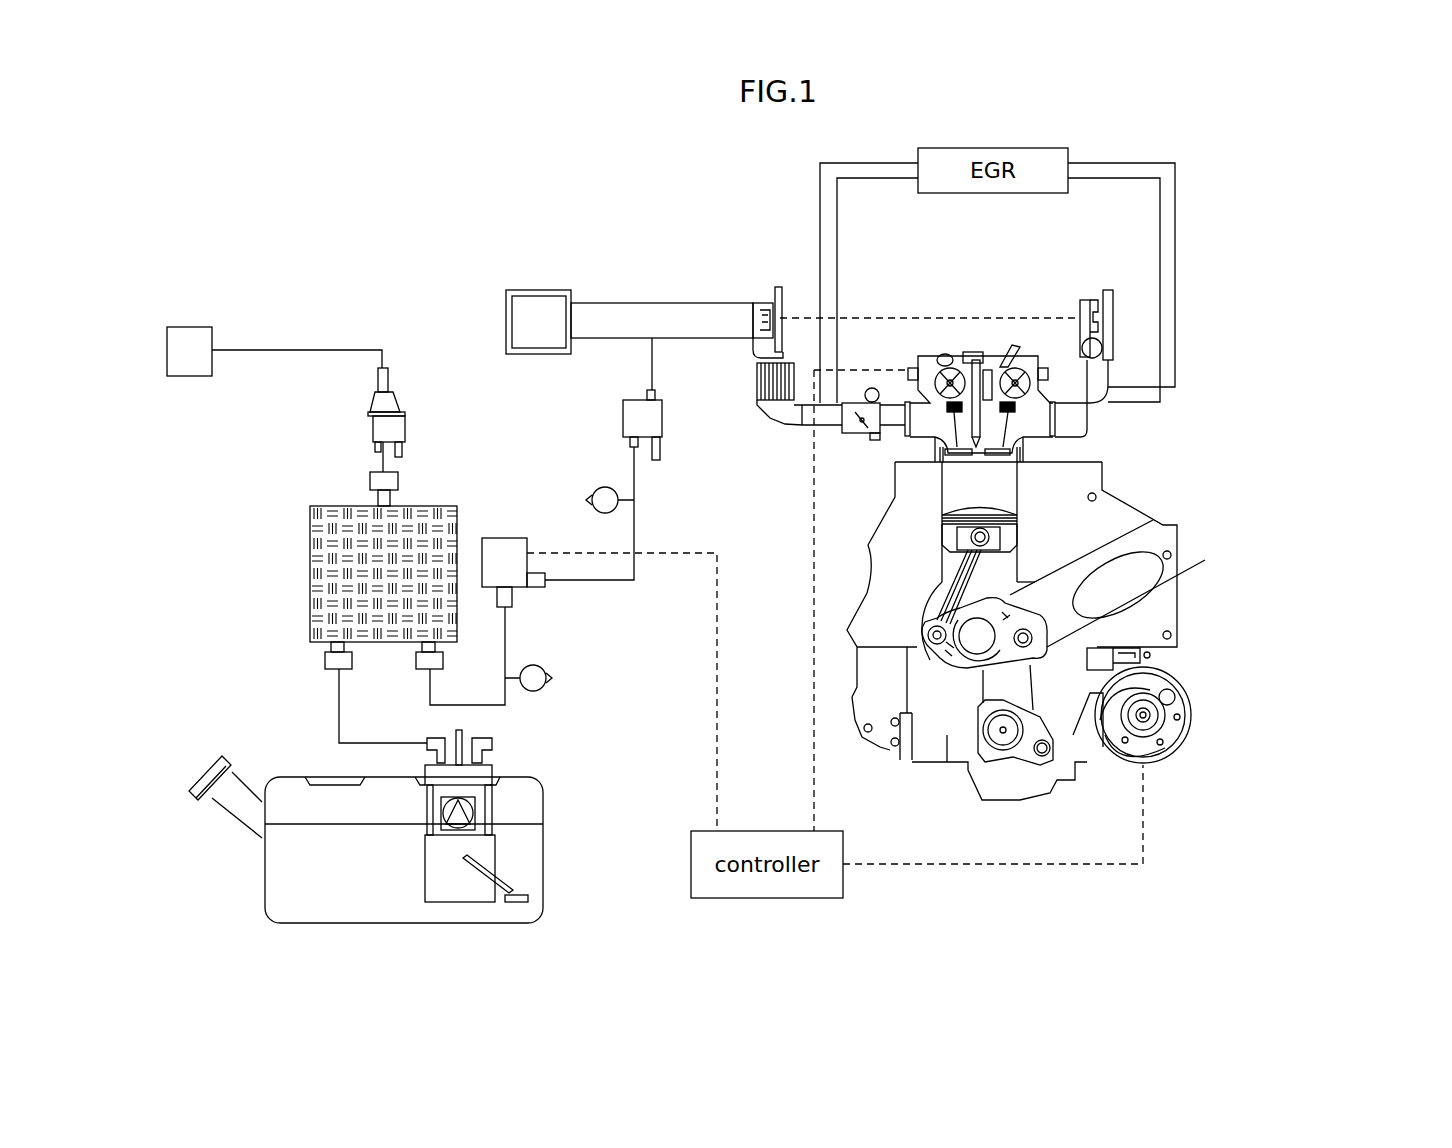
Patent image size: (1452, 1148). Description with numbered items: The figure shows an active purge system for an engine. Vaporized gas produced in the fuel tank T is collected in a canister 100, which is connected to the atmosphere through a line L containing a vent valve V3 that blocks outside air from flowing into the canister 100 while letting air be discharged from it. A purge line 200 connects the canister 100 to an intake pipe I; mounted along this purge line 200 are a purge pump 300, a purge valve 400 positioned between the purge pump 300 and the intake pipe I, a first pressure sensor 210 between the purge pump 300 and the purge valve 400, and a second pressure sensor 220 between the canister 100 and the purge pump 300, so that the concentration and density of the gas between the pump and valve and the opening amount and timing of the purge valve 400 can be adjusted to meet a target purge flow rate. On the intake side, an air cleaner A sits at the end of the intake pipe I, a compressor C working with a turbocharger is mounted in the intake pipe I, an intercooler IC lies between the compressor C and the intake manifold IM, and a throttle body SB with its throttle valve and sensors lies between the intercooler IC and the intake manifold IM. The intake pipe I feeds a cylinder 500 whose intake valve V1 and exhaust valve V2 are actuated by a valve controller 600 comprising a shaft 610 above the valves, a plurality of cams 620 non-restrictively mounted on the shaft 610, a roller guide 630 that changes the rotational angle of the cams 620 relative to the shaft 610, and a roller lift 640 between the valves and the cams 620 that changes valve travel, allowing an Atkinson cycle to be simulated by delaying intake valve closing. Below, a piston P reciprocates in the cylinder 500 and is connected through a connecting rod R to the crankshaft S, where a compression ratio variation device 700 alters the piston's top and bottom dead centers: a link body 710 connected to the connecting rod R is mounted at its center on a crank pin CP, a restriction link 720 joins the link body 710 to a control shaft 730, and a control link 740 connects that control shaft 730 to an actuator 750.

The line L is at (296, 345).
The vent valve V3 is at (370, 430).
The canister 100 is at (312, 578).
The purge line 200 is at (505, 642).
The purge pump 300 is at (503, 537).
The first pressure sensor 210 is at (603, 490).
The second pressure sensor 220 is at (536, 688).
The fuel tank T is at (545, 862).
The air cleaner A is at (538, 312).
The intake pipe I is at (667, 318).
The purge valve 400 is at (625, 416).
The compressor C is at (775, 300).
The intercooler IC is at (758, 378).
The throttle body SB is at (857, 418).
The intake manifold IM is at (927, 417).
The cams 620 is at (937, 370).
The roller guide 630 is at (953, 357).
The valve controller 600 is at (976, 340).
The roller lift 640 is at (984, 380).
The shaft 610 is at (1016, 380).
The intake valve V1 is at (938, 449).
The exhaust valve V2 is at (1022, 442).
The cylinder 500 is at (961, 493).
The piston P is at (950, 537).
The connecting rod R is at (965, 567).
The crank pin CP is at (977, 637).
The compression ratio variation device 700 is at (1273, 470).
The link body 710 is at (1153, 520).
The restriction link 720 is at (1040, 672).
The control shaft 730 is at (1143, 715).
The control link 740 is at (1010, 728).
The actuator 750 is at (1180, 742).
The crankshaft S is at (1043, 582).